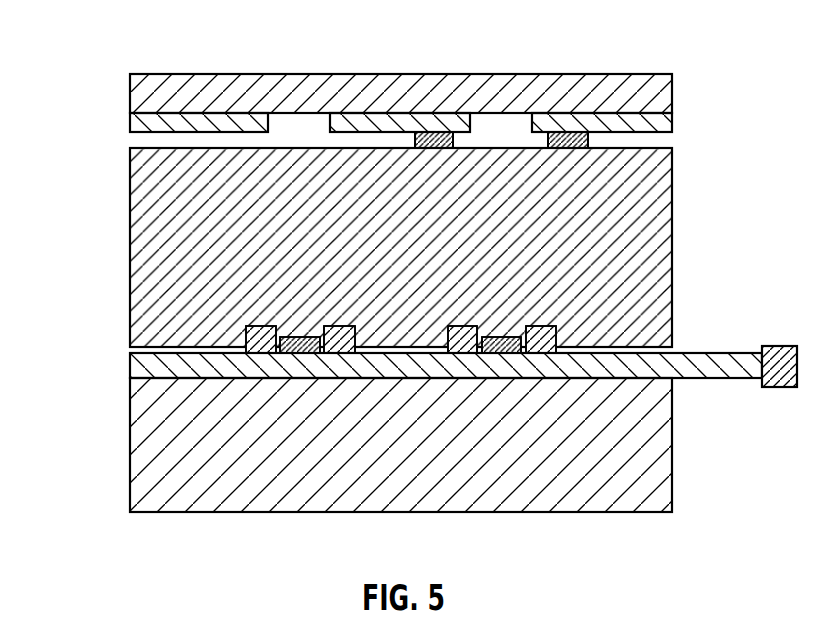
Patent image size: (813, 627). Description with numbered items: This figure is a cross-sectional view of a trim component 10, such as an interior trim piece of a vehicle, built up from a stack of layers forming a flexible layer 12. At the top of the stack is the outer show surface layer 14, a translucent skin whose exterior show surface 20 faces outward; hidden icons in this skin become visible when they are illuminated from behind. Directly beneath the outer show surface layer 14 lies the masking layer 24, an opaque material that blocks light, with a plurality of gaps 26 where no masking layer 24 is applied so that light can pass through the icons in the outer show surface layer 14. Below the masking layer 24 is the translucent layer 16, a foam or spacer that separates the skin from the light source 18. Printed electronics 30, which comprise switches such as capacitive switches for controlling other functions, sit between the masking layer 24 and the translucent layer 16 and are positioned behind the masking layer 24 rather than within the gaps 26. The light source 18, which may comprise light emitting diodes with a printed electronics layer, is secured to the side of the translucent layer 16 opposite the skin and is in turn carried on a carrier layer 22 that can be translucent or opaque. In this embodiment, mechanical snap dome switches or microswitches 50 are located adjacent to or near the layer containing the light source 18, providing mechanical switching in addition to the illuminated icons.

The trim component 10 is at (685, 62).
The flexible layer 12 is at (92, 185).
The outer show surface layer 14 is at (205, 80).
The translucent layer 16 is at (130, 247).
The light source 18 is at (130, 370).
The exterior show surface 20 is at (548, 73).
The carrier layer 22 is at (130, 432).
The masking layer 24 is at (130, 124).
The gaps 26 is at (291, 122).
The printed electronics 30 is at (437, 132).
The snap dome switches or microswitches 50 is at (298, 353).